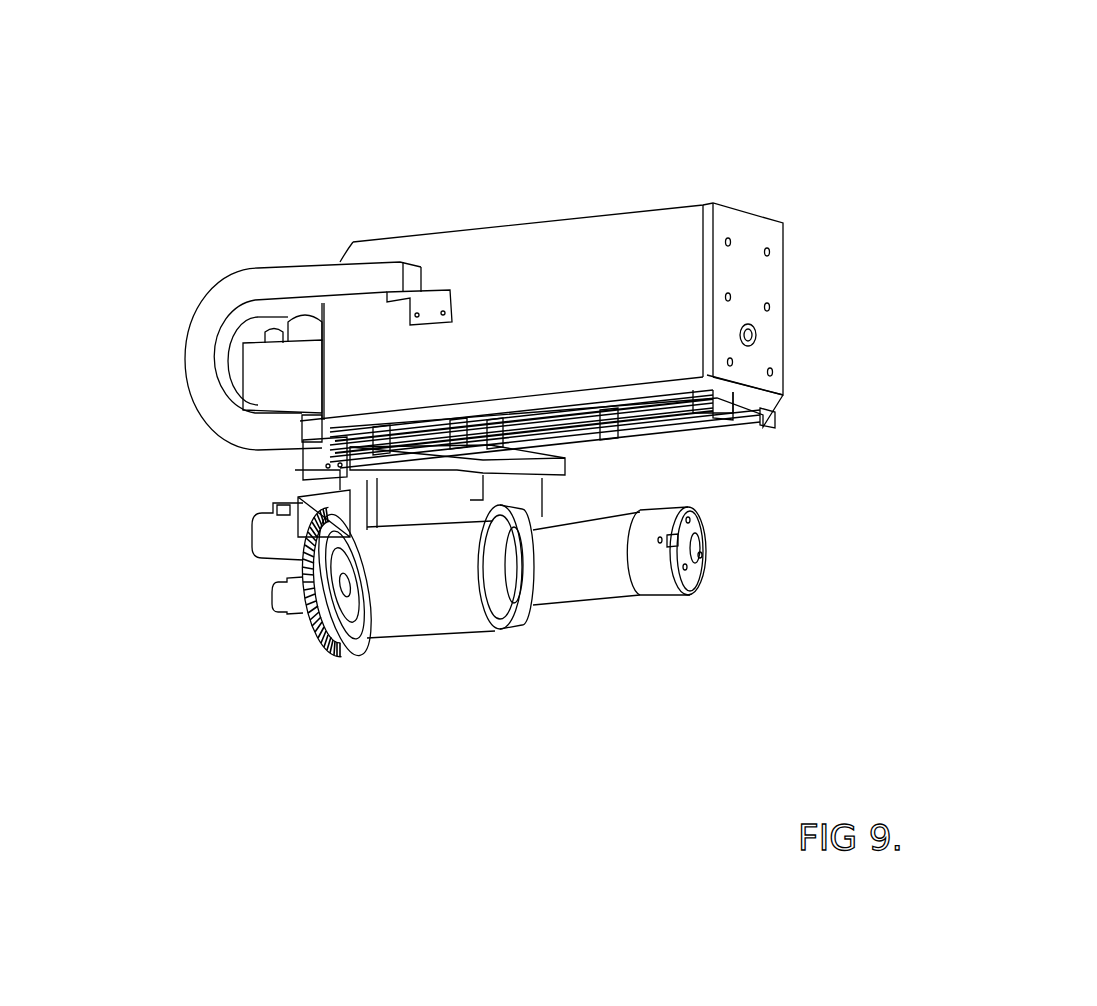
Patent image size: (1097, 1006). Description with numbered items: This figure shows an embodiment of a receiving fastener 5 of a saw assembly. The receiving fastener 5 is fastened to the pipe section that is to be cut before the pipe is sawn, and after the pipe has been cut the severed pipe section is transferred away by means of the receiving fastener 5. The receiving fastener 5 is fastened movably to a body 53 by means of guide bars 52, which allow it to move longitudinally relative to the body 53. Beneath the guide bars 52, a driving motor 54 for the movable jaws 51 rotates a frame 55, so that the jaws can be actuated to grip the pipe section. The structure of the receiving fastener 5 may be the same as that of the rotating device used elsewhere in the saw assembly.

The receiving fastener 5 is at (453, 667).
The movable jaws 51 is at (708, 567).
The guide bars 52 is at (707, 462).
The body 53 is at (727, 202).
The driving motor 54 is at (267, 563).
The frame 55 is at (347, 678).